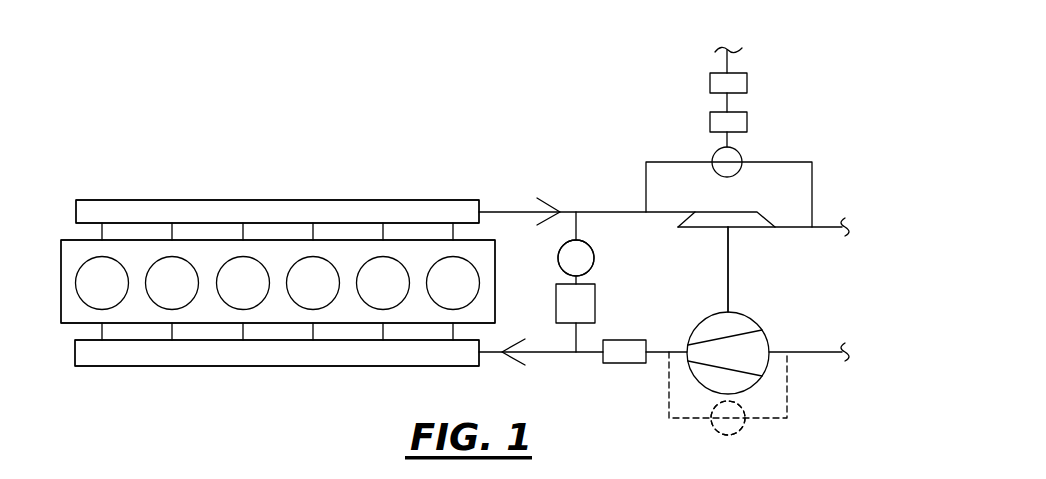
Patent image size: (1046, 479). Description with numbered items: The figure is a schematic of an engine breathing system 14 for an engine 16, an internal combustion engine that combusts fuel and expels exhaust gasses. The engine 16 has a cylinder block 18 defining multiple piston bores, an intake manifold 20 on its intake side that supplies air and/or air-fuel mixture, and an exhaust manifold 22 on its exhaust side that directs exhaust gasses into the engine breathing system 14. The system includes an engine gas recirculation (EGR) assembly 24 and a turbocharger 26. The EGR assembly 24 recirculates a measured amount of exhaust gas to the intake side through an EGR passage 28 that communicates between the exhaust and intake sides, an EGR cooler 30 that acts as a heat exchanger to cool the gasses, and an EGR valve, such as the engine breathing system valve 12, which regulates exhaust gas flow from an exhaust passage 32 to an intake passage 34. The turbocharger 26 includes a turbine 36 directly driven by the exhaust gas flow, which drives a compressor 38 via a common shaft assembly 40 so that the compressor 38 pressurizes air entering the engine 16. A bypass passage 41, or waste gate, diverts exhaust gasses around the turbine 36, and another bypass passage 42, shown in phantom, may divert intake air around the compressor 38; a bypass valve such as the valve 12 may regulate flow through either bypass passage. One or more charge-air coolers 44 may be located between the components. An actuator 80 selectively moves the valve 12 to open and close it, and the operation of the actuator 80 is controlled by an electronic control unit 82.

The engine breathing system valve 12 is at (595, 259).
The engine breathing system 14 is at (828, 142).
The engine 16 is at (225, 200).
The cylinder block 18 is at (72, 250).
The intake manifold 20 is at (202, 350).
The exhaust manifold 22 is at (333, 208).
The engine gas recirculation (EGR) assembly 24 is at (603, 306).
The turbocharger 26 is at (728, 285).
The EGR passage 28 is at (578, 233).
The EGR cooler 30 is at (556, 298).
The exhaust passage 32 is at (505, 210).
The intake passage 34 is at (548, 354).
The turbine 36 is at (728, 212).
The compressor 38 is at (702, 387).
The common shaft assembly 40 is at (727, 254).
The bypass passage 41 is at (648, 160).
The bypass passage 42 is at (785, 422).
The charge-air cooler 44 is at (640, 365).
The actuator 80 is at (747, 120).
The electronic control unit (ECU) 82 is at (747, 83).